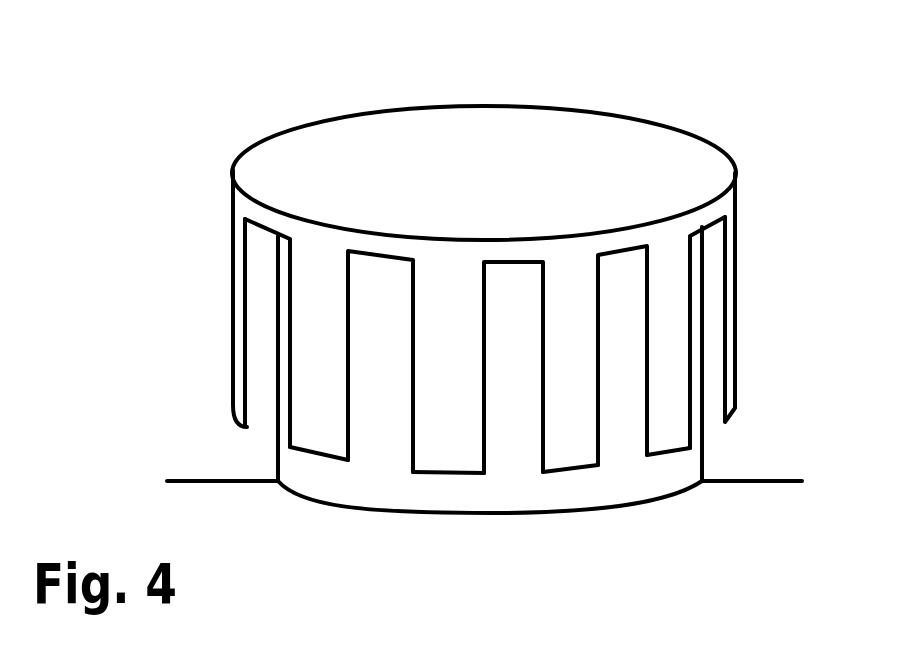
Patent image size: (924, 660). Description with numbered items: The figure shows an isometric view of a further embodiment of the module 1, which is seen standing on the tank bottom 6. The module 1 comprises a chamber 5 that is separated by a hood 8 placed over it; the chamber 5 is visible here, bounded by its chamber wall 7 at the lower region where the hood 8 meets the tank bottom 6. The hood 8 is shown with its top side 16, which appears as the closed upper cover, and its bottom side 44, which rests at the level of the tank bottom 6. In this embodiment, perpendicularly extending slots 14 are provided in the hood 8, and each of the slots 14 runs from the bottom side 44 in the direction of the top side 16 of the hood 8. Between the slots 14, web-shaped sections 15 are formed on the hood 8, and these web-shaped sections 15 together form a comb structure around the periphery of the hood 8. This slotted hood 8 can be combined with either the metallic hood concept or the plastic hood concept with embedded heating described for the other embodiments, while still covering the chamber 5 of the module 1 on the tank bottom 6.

The module 1 is at (190, 134).
The top side 16 is at (571, 156).
The hood 8 is at (735, 272).
The web-shaped sections 15 is at (452, 467).
The slots 14 is at (515, 458).
The chamber 5 is at (703, 458).
The chamber wall 7 is at (703, 470).
The bottom side 44 is at (264, 442).
The tank bottom 6 is at (768, 481).